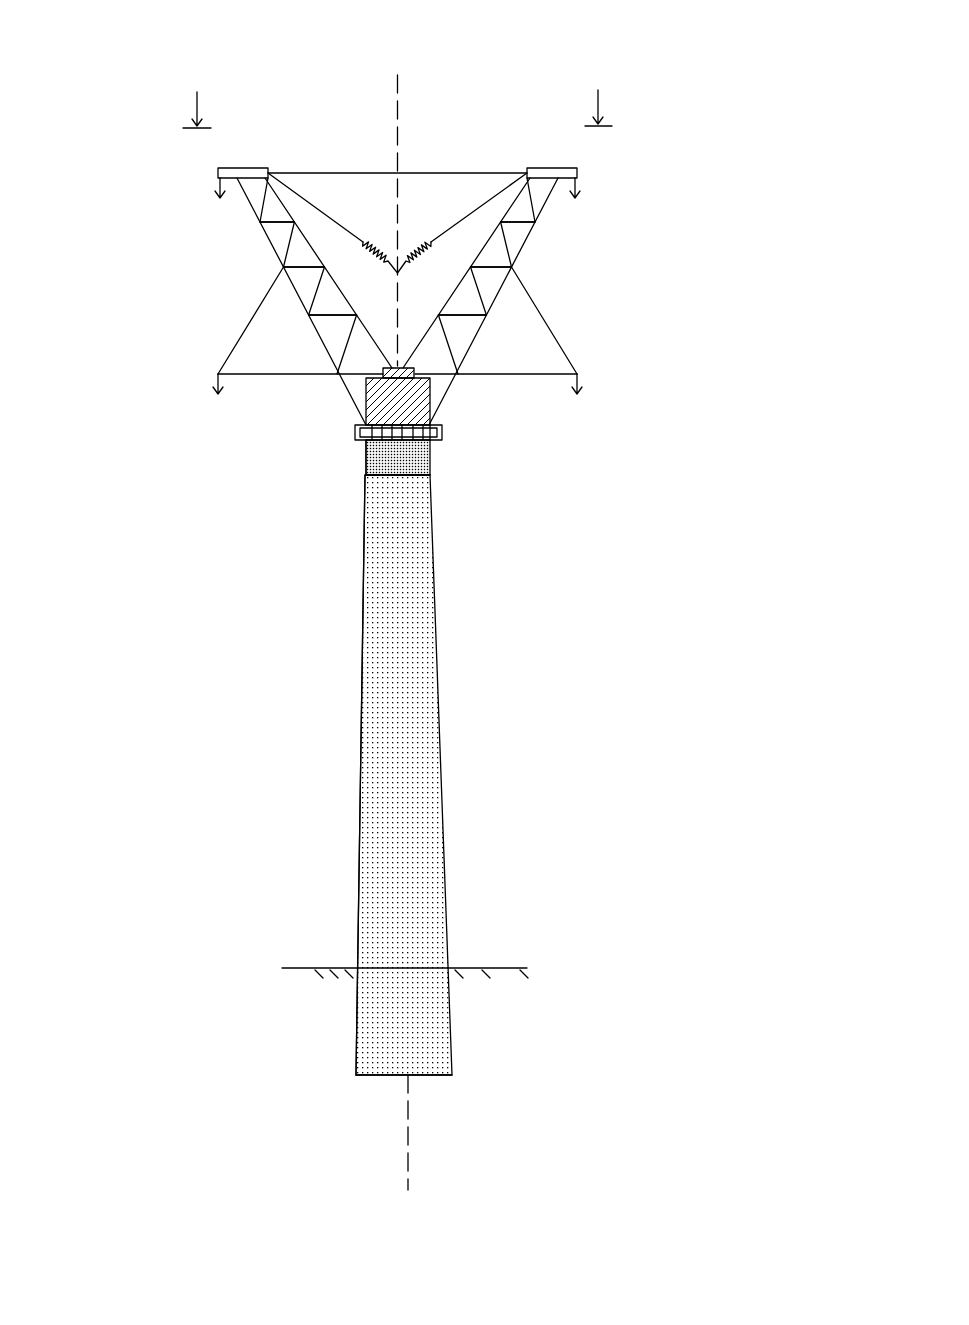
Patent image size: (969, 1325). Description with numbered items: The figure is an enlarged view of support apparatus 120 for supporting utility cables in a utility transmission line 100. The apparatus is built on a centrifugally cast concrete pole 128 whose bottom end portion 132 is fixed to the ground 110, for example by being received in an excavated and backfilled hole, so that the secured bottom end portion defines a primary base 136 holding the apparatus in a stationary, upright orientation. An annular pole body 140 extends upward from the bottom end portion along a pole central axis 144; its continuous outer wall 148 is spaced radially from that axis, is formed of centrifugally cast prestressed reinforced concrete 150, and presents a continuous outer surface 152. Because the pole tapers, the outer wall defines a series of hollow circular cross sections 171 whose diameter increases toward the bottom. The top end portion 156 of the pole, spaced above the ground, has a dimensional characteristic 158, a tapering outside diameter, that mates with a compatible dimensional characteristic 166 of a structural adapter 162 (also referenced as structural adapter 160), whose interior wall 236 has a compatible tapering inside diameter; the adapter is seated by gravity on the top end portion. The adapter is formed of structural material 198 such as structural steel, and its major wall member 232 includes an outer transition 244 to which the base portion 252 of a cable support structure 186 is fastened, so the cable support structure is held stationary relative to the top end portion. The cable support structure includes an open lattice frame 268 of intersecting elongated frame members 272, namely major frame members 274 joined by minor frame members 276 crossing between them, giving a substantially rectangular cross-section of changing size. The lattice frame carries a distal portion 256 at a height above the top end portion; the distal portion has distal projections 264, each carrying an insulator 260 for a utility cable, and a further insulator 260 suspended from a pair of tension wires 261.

The support structure assembly 100 is at (776, 38).
The ground 110 is at (503, 968).
The support apparatus 120 is at (372, 448).
The centrifugally cast concrete pole 128 is at (359, 788).
The bottom end portion 132 is at (481, 1070).
The primary base 136 is at (452, 1040).
The annular pole body 140 is at (359, 788).
The pole central axis 144 is at (403, 1102).
The continuous outer wall 148 is at (359, 788).
The centrifugally cast prestressed reinforced concrete 150 is at (359, 788).
The continuous outer surface 152 is at (360, 737).
The top end portion 156 is at (501, 520).
The dimensional characteristic 158 is at (501, 520).
The structural adapter 160 is at (501, 520).
The structural adapter 162 is at (432, 470).
The compatible dimensional characteristic 166 is at (502, 521).
The hollow circular cross sections 171 is at (502, 521).
The cable support structure 186 is at (533, 226).
The structural material 198 is at (526, 355).
The major wall member 232 is at (366, 460).
The interior wall 236 is at (421, 457).
The outer transition 244 is at (442, 432).
The base portion 252 is at (372, 448).
The distal portion 256 is at (400, 189).
The insulator 260 is at (220, 188).
The tension wires 261 is at (428, 237).
The distal projections 264 is at (400, 189).
The open lattice frame 268 is at (273, 250).
The elongated frame members 272 is at (255, 301).
The major frame members 274 is at (262, 231).
The minor frame members 276 is at (238, 168).